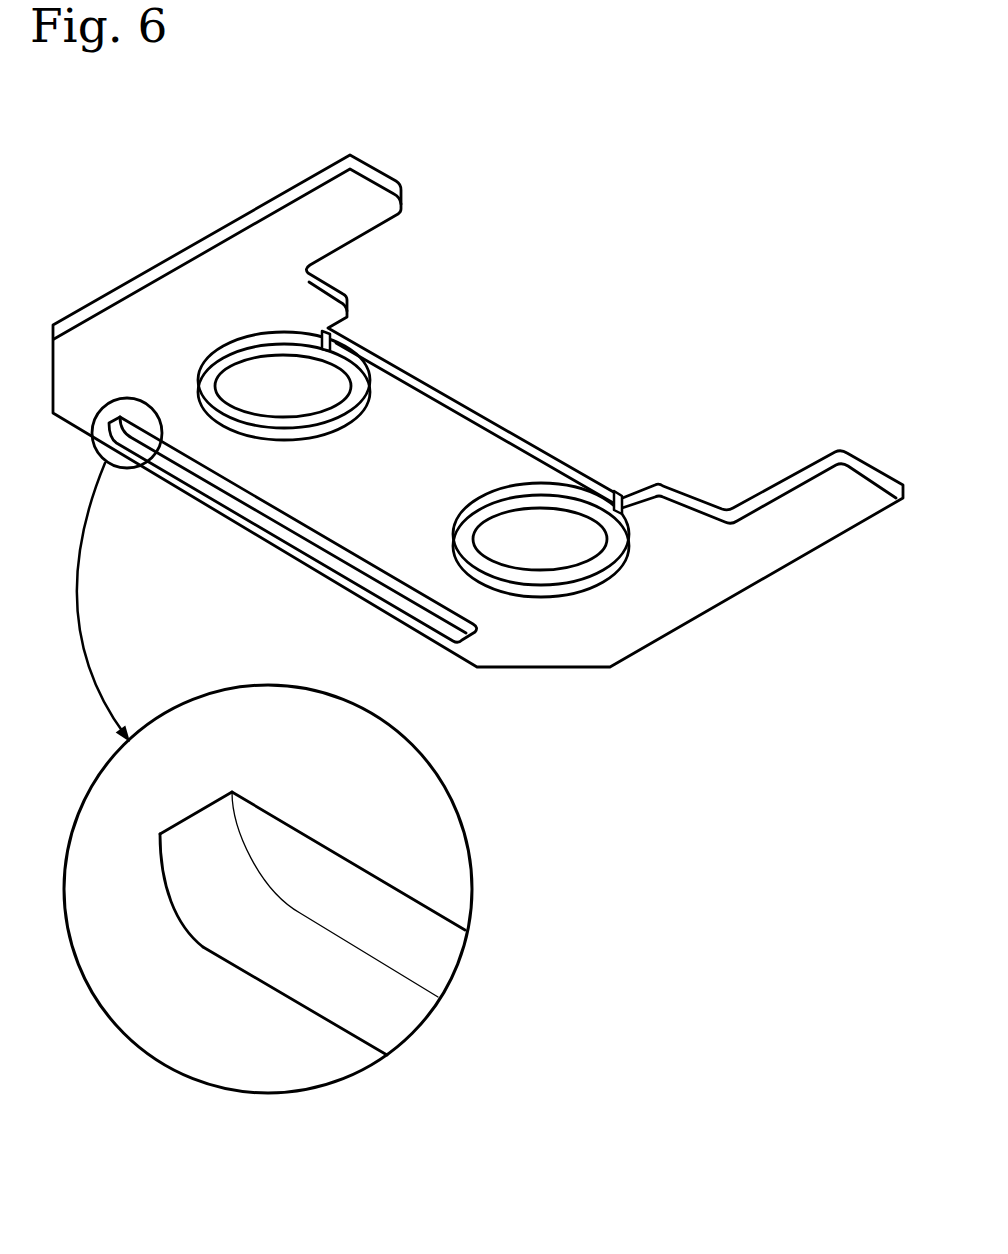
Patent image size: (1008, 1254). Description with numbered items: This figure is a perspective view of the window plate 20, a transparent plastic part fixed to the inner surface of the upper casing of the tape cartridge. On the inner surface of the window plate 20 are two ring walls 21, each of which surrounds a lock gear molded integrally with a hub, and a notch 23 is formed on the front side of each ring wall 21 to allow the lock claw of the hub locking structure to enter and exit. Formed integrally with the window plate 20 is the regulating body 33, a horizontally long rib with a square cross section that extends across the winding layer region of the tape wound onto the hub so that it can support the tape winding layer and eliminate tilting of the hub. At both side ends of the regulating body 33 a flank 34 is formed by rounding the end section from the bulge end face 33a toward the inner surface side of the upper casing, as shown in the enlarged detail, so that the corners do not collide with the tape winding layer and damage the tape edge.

The window plate 20 is at (465, 395).
The ring wall 21 is at (290, 438).
The notch 23 is at (323, 355).
The regulating body 33 is at (266, 527).
The bulge end face 33a is at (328, 998).
The flank 34 is at (110, 430).